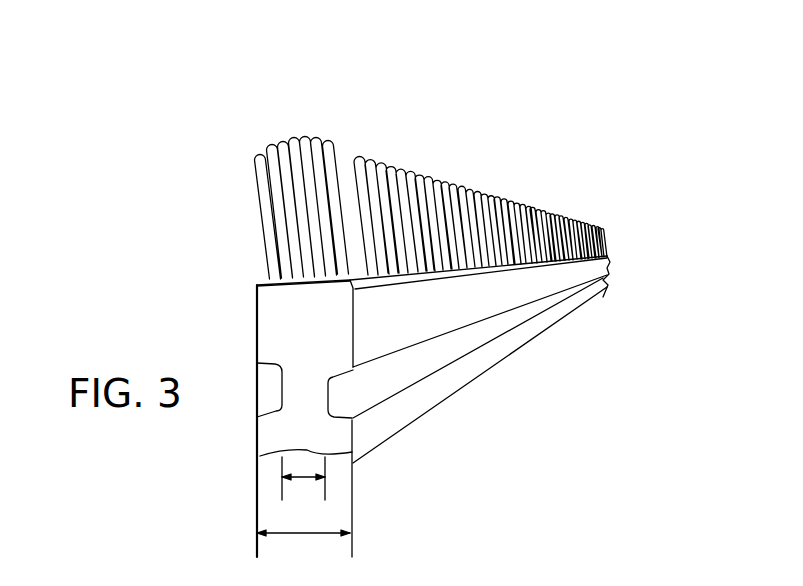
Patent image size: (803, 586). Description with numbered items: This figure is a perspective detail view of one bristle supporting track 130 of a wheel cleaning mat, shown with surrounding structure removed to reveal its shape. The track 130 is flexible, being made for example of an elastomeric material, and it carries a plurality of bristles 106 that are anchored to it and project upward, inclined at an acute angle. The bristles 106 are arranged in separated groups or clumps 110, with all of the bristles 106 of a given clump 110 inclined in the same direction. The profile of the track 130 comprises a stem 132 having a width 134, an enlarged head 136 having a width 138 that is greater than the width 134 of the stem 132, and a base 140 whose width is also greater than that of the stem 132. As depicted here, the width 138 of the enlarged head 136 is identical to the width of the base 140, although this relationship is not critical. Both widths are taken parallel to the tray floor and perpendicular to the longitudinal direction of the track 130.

The bristles 106 is at (310, 140).
The separated groups or clumps of bristles 110 is at (411, 144).
The bristle supporting track 130 is at (382, 406).
The stem 132 is at (307, 397).
The width of the stem 134 is at (303, 478).
The enlarged head 136 is at (293, 318).
The width of the enlarged head 138 is at (283, 533).
The base 140 is at (512, 336).